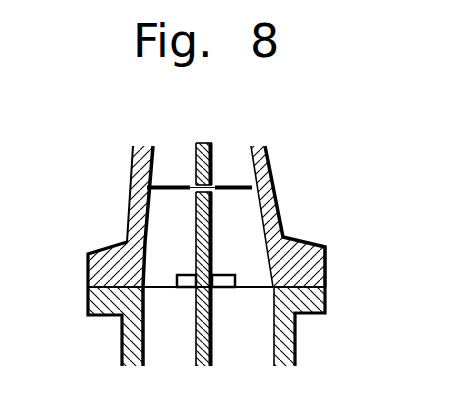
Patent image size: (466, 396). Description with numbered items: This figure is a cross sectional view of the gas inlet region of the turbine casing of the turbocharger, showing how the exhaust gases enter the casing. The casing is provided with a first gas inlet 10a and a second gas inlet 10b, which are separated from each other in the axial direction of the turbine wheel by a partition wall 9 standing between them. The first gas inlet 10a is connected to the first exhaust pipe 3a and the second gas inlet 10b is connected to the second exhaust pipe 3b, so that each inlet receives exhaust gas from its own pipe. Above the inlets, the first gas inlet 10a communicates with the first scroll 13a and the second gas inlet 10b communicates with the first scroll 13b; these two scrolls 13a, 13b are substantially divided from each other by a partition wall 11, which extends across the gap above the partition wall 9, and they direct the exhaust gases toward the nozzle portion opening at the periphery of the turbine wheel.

The first exhaust pipe 3a is at (175, 328).
The second exhaust pipe 3b is at (248, 337).
The partition wall 9 is at (212, 218).
The first gas inlet 10a is at (170, 250).
The second gas inlet 10b is at (247, 257).
The partition wall 11 is at (212, 183).
The first scroll 13a is at (174, 173).
The first scroll 13b is at (233, 167).